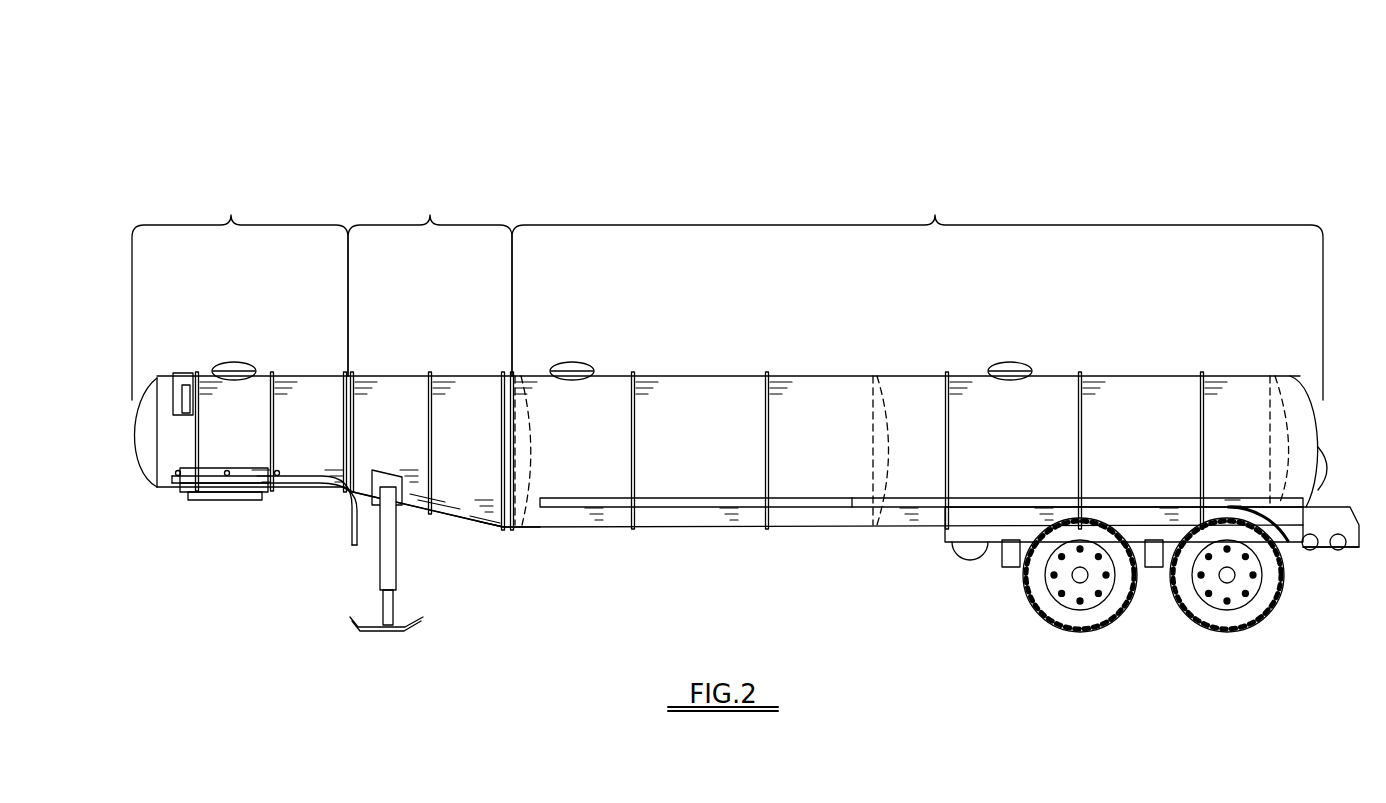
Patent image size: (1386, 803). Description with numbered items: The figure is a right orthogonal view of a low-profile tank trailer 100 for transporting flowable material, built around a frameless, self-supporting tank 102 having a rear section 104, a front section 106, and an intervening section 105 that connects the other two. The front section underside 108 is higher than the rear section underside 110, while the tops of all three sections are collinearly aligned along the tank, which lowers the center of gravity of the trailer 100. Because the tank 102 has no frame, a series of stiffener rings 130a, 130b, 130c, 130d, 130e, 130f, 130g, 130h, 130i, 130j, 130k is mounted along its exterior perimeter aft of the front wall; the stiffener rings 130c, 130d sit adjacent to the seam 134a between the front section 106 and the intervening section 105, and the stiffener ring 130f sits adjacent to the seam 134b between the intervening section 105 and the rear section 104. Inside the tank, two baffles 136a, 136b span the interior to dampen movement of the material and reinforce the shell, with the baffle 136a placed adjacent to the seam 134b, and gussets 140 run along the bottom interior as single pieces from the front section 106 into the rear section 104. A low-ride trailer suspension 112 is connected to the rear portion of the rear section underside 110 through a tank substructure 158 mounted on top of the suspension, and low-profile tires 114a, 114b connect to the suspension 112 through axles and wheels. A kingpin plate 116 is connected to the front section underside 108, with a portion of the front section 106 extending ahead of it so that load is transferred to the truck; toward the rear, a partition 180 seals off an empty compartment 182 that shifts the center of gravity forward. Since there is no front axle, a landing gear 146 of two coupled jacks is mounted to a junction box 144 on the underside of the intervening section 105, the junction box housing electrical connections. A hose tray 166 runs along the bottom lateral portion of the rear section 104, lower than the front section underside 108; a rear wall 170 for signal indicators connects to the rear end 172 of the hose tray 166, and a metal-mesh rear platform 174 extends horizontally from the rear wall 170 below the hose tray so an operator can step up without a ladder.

The low-profile tank trailer 100 is at (1160, 145).
The frameless, self-supporting tank 102 is at (732, 472).
The rear section 104 is at (917, 293).
The intervening section 105 is at (430, 281).
The front section 106 is at (240, 293).
The front section underside 108 is at (295, 488).
The rear section underside 110 is at (710, 525).
The low-ride trailer suspension 112 is at (1008, 560).
The low-profile tire 114a is at (1087, 620).
The low-profile tire 114b is at (1225, 618).
The kingpin plate 116 is at (207, 500).
The stiffener ring 130a is at (197, 372).
The stiffener ring 130b is at (272, 372).
The stiffener ring 130c is at (345, 374).
The stiffener ring 130d is at (430, 374).
The stiffener ring 130e is at (503, 374).
The stiffener ring 130f is at (512, 374).
The stiffener ring 130g is at (633, 374).
The stiffener ring 130h is at (767, 374).
The stiffener ring 130i is at (947, 374).
The stiffener ring 130j is at (1080, 374).
The stiffener ring 130k is at (1202, 374).
The seam 134a is at (347, 488).
The seam 134b is at (512, 527).
The baffle 136a is at (535, 463).
The baffle 136b is at (880, 468).
The gusset 140 is at (447, 510).
The junction box 144 is at (402, 502).
The landing gear 146 is at (393, 600).
The tank substructure 158 is at (972, 537).
The hose tray 166 is at (852, 498).
The rear wall 170 is at (1318, 542).
The rear end of hose tray 172 is at (1312, 493).
The rear platform 174 is at (1347, 547).
The partition 180 is at (1282, 423).
The empty compartment 182 is at (1308, 437).